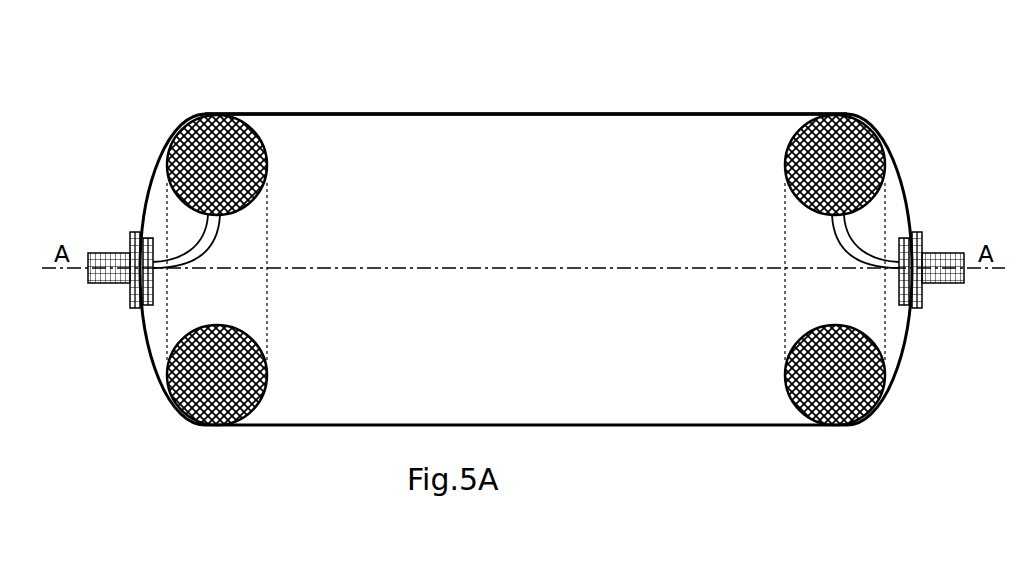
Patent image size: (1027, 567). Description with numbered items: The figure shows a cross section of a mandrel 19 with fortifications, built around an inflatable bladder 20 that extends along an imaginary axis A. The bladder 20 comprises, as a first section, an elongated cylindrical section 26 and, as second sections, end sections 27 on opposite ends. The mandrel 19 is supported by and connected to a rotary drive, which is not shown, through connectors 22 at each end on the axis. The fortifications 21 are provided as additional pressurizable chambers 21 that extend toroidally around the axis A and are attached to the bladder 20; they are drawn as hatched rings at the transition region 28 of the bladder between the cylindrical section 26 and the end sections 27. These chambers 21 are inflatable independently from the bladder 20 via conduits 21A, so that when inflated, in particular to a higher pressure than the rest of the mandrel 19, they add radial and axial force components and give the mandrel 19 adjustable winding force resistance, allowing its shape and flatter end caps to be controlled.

The mandrel 19 is at (604, 95).
The inflatable bladder 20 is at (514, 112).
The elongated cylindrical section 26 is at (723, 113).
The end sections 27 is at (150, 347).
The transition region 28 is at (185, 121).
The fortifications 21 is at (177, 213).
The conduits 21A is at (197, 248).
The connectors 22 is at (95, 285).